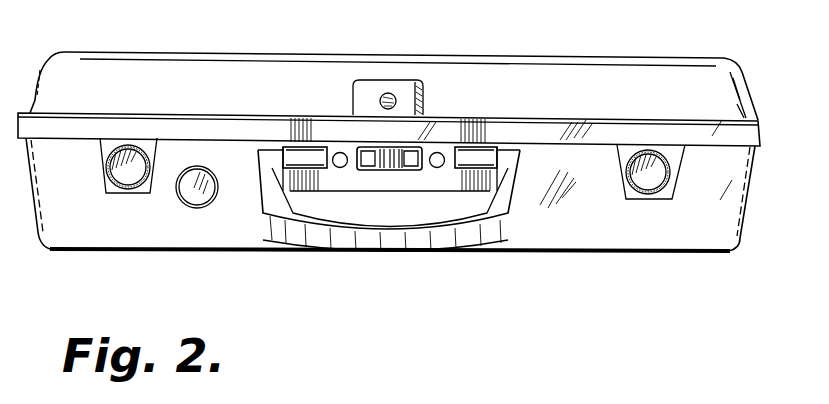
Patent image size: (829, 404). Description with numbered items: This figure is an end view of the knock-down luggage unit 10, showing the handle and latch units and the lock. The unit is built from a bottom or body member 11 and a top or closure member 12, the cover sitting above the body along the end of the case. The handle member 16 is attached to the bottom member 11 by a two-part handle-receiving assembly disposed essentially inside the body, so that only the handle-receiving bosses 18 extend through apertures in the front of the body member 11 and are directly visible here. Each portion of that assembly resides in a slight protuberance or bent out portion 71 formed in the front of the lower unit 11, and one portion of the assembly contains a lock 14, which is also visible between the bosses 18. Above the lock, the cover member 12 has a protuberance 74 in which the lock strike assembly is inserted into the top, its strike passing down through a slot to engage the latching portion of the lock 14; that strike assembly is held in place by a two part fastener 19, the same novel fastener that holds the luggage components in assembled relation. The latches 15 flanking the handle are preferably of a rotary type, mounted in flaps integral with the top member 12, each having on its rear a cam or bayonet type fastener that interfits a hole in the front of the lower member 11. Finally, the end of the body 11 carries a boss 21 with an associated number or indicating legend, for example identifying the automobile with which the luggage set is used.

The luggage unit 10 is at (591, 51).
The bottom or body member 11 is at (65, 223).
The top or closure member 12 is at (97, 75).
The lock 14 is at (413, 163).
The latches 15 is at (127, 195).
The handle member 16 is at (350, 243).
The handle-receiving bosses 18 is at (312, 160).
The two part fastener 19 is at (339, 152).
The boss 21 is at (213, 199).
The protuberance or bent out portion 71 is at (380, 192).
The protuberance 74 is at (403, 88).